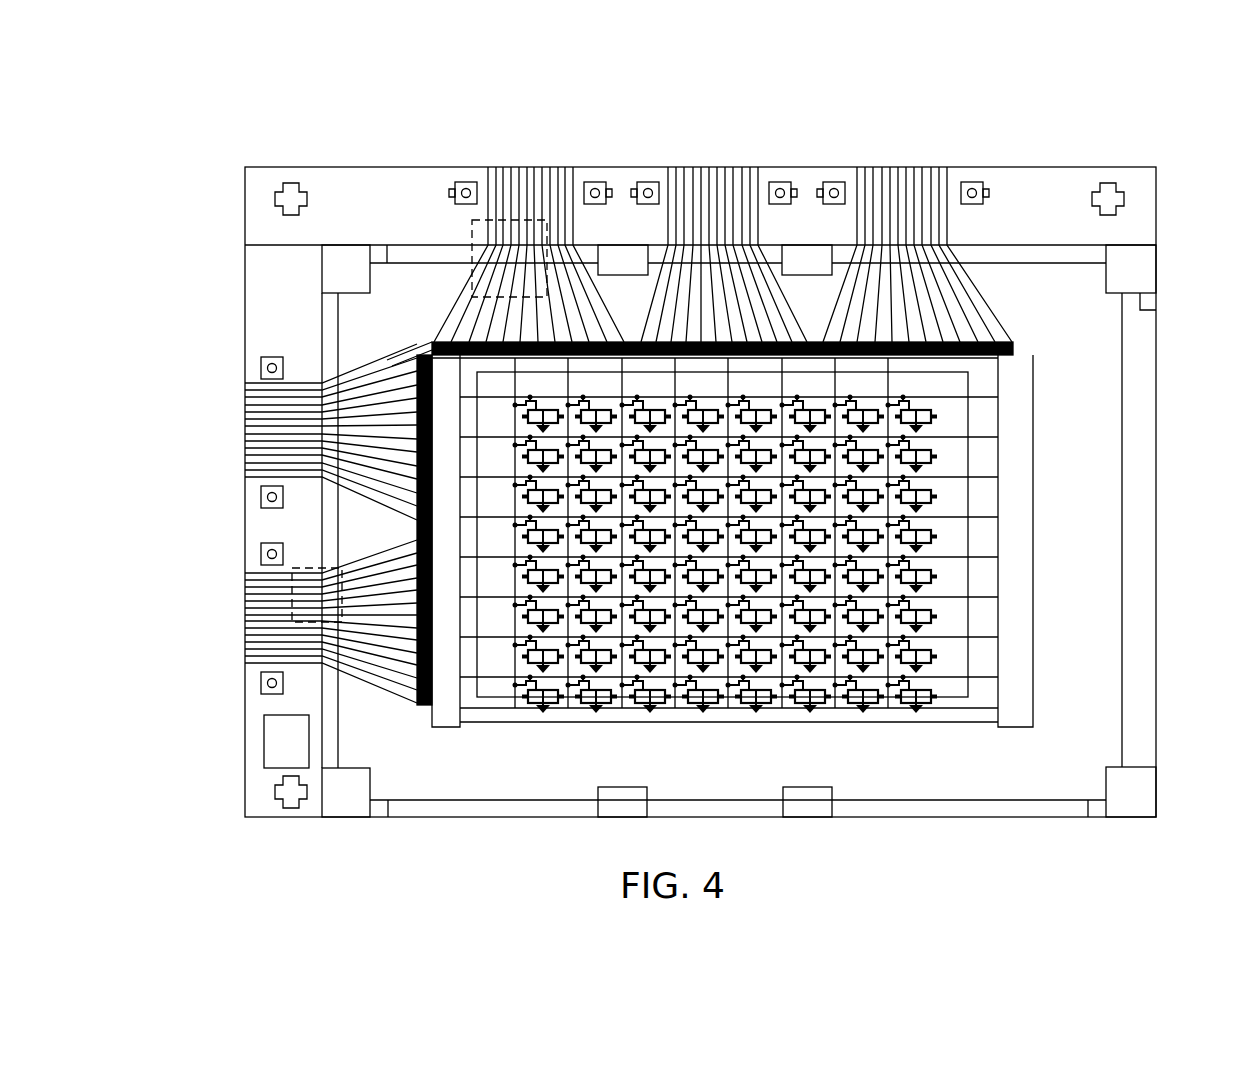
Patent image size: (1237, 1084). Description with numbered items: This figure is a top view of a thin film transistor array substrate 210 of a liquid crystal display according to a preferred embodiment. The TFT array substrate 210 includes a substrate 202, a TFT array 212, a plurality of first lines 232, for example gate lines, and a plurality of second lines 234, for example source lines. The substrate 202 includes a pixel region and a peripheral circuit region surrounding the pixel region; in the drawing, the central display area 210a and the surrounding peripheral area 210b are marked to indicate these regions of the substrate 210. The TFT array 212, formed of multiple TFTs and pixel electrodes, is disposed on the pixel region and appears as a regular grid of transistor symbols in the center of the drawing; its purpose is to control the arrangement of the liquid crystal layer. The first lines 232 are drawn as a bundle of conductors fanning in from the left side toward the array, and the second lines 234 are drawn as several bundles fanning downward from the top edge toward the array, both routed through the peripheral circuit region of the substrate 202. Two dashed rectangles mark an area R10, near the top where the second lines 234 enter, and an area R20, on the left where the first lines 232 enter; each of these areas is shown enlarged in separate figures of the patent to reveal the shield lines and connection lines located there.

The TFT array substrate 210 is at (1208, 863).
The display region 210a is at (745, 383).
The peripheral region 210b is at (406, 285).
The substrate 202 is at (1145, 493).
The TFT array 212 is at (935, 530).
The first lines 232 is at (357, 475).
The second lines 234 is at (590, 297).
The area R10 is at (520, 221).
The area R20 is at (290, 600).